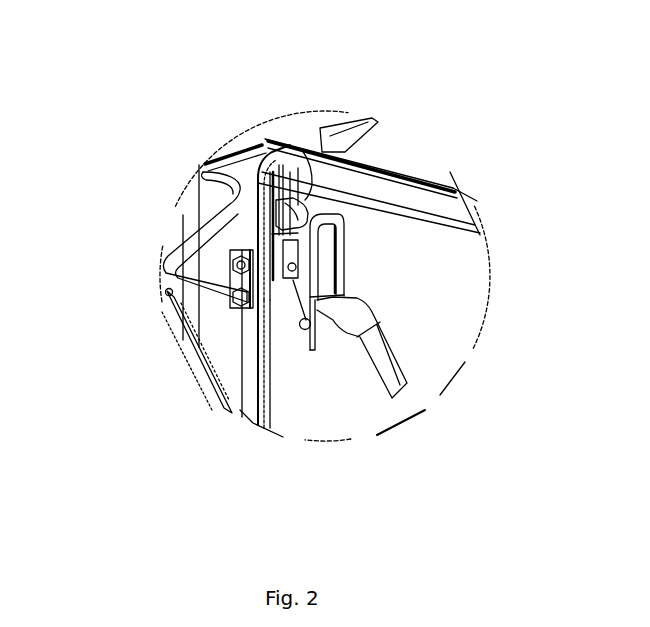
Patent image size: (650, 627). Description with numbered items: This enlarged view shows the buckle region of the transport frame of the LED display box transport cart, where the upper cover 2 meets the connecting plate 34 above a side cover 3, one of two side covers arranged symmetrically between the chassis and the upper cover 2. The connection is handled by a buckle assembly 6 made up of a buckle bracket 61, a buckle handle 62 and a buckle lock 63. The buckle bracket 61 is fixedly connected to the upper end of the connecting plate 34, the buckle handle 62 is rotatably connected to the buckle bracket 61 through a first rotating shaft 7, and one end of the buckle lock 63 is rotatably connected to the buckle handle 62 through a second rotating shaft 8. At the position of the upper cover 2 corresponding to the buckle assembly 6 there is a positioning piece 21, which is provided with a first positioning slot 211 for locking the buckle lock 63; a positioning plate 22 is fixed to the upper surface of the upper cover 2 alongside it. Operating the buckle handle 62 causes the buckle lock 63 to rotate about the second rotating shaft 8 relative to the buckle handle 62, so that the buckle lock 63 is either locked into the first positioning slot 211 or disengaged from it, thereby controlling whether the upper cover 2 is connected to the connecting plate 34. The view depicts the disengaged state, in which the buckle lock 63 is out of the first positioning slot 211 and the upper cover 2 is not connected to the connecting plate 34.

The upper cover 2 is at (369, 127).
The positioning piece 21 is at (221, 170).
The first positioning slot 211 is at (271, 148).
The positioning plate 22 is at (419, 135).
The side cover 3 is at (146, 366).
The connecting plate 34 is at (208, 413).
The buckle assembly 6 is at (450, 326).
The buckle bracket 61 is at (143, 264).
The buckle handle 62 is at (440, 368).
The buckle lock 63 is at (441, 295).
The first rotating shaft 7 is at (167, 201).
The second rotating shaft 8 is at (368, 429).